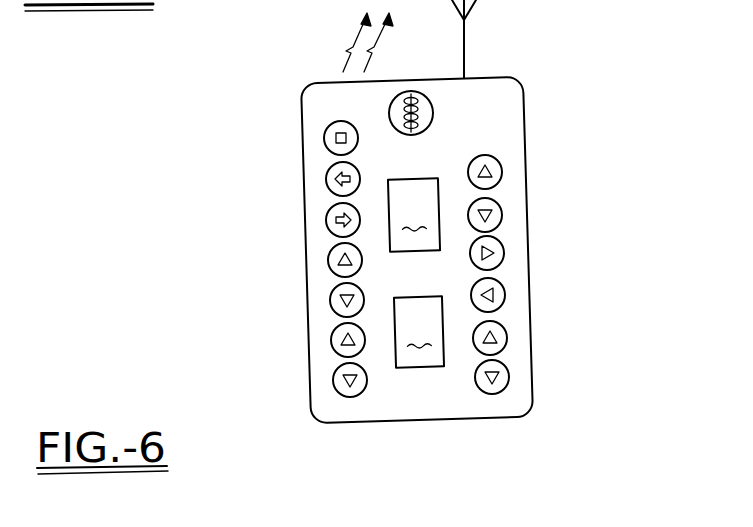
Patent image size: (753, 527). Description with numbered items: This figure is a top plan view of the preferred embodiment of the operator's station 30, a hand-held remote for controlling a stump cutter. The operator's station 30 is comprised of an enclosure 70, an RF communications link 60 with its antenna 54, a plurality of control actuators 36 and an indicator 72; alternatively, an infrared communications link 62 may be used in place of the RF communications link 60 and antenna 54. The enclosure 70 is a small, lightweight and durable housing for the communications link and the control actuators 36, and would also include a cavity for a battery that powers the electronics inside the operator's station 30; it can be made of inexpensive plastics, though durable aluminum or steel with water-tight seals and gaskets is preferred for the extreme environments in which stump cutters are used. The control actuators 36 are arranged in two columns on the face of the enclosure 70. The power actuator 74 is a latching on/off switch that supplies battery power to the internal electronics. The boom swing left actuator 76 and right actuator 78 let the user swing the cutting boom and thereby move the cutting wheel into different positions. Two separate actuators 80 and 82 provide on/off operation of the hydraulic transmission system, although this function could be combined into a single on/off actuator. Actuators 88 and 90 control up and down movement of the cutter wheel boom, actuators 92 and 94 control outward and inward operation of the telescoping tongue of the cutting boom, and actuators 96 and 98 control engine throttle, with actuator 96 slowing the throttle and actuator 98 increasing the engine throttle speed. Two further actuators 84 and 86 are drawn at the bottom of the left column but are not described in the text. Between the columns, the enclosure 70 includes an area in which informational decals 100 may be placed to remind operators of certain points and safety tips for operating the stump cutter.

The operator's station 30 is at (245, 104).
The control actuators 36 is at (350, 392).
The antenna 54 is at (470, 8).
The RF communications link 60 is at (466, 77).
The infrared communications link 62 is at (346, 52).
The enclosure 70 is at (525, 100).
The indicator 72 is at (412, 92).
The power actuator 74 is at (324, 138).
The boom swing left actuator 76 is at (326, 180).
The boom swing right actuator 78 is at (326, 221).
The hydraulic transmission on/off actuator 80 is at (328, 261).
The hydraulic transmission on/off actuator 82 is at (330, 301).
The up button 84 is at (331, 341).
The down button 86 is at (333, 381).
The boom up actuator 88 is at (502, 172).
The boom down actuator 90 is at (502, 215).
The tongue outward actuator 92 is at (504, 254).
The tongue inward actuator 94 is at (505, 295).
The throttle slow actuator 96 is at (507, 337).
The throttle increase actuator 98 is at (509, 377).
The informational decals 100 is at (416, 272).